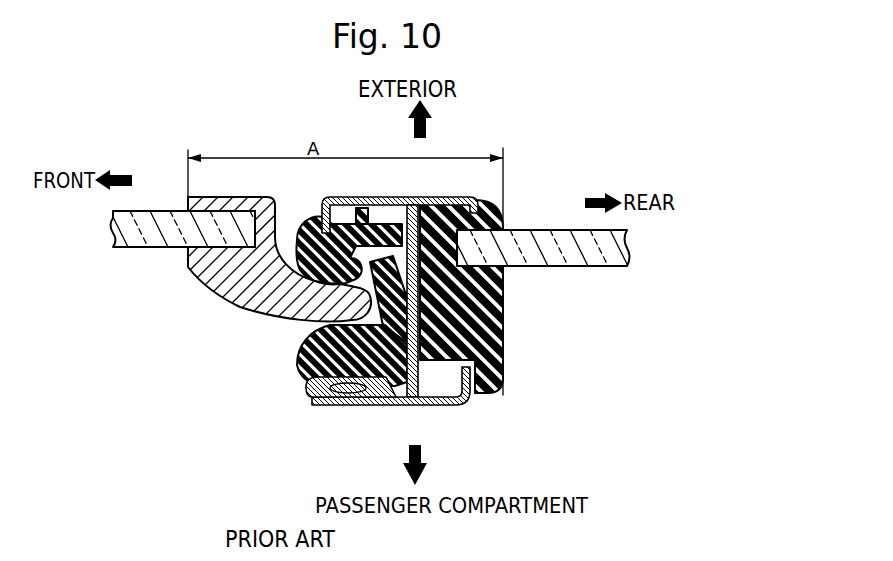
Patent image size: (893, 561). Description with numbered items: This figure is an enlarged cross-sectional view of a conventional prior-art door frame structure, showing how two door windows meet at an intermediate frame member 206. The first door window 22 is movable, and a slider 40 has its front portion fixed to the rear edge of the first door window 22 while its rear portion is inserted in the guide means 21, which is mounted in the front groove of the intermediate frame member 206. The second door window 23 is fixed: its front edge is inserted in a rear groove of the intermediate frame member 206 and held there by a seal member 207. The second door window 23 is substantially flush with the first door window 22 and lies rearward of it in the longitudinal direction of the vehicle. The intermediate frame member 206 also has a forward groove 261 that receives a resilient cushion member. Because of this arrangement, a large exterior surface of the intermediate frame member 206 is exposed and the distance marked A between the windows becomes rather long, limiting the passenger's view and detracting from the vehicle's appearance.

The guide means 21 is at (293, 373).
The first door window 22 is at (134, 238).
The second door window 23 is at (535, 230).
The slider 40 is at (228, 283).
The intermediate frame member 206 is at (388, 324).
The seal member 207 is at (498, 332).
The forward groove 261 is at (395, 394).